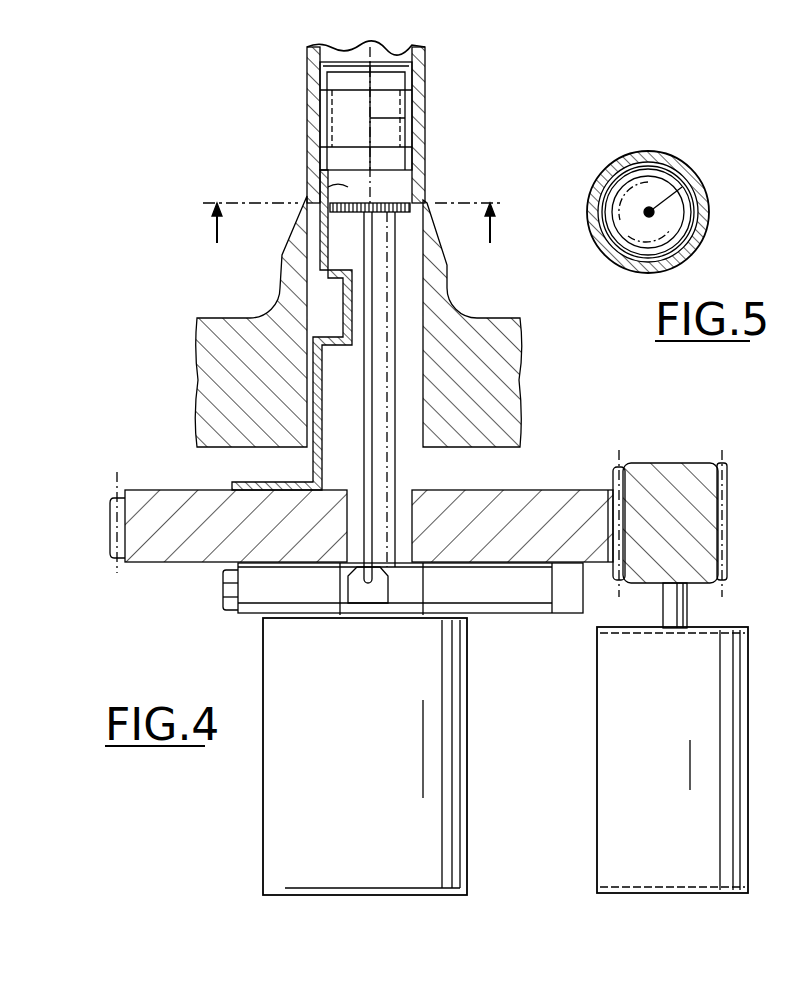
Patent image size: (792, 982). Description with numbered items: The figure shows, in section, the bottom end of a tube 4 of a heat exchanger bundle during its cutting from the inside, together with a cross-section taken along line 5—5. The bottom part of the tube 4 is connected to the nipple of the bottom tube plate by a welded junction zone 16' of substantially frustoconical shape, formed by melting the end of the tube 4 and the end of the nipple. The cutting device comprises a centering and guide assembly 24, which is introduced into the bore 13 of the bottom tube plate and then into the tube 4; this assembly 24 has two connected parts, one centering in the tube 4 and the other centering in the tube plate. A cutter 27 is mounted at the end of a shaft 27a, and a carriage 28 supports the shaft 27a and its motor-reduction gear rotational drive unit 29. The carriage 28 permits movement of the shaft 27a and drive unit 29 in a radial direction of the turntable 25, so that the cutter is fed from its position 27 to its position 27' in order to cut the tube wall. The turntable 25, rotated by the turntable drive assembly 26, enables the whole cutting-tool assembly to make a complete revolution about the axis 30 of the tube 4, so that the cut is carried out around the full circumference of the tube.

In FIG. 5, the tube 4 is at (619, 158).
In FIG. 4, the section line 5- 5 is at (352, 204).
In FIG. 4, the bore of the bottom tube plate 13 is at (410, 408).
In FIG. 4, the welded junction zone 16' is at (395, 122).
In FIG. 4, the centering and guide assembly 24 is at (338, 121).
In FIG. 5, the centering and guide assembly 24 is at (618, 263).
In FIG. 4, the turntable 25 is at (163, 557).
In FIG. 4, the turntable drive assembly 26 is at (706, 606).
In FIG. 4, the cutter 27 is at (336, 182).
In FIG. 5, the cutter 27 is at (685, 200).
In FIG. 4, the cutter feed position 27' is at (410, 389).
In FIG. 5, the cutter feed position 27' is at (701, 212).
In FIG. 4, the shaft 27a is at (364, 323).
In FIG. 5, the shaft 27a is at (678, 172).
In FIG. 4, the carriage 28 is at (255, 591).
In FIG. 4, the motor-reduction gear drive unit 29 is at (272, 798).
In FIG. 4, the axis of the tube 30 is at (370, 118).